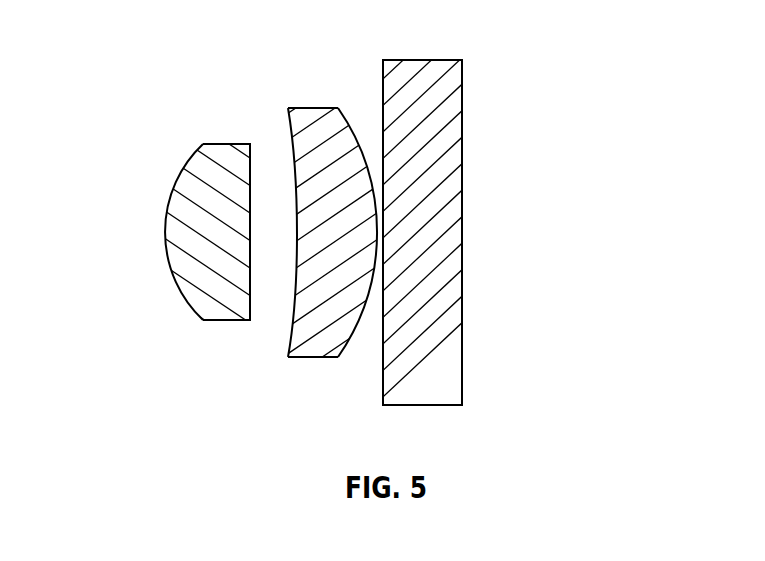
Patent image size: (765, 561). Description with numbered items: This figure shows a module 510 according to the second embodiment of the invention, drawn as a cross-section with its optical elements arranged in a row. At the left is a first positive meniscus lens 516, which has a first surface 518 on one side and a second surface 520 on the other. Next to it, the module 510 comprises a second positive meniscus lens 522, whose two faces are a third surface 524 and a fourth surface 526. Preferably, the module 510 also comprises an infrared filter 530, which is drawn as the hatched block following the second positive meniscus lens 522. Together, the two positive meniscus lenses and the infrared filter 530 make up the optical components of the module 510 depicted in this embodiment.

The module 510 is at (138, 93).
The first positive meniscus lens 516 is at (220, 307).
The first surface 518 is at (194, 156).
The second surface 520 is at (244, 235).
The second positive meniscus lens 522 is at (320, 347).
The third surface 524 is at (297, 203).
The fourth surface 526 is at (352, 106).
The infrared filter 530 is at (438, 385).